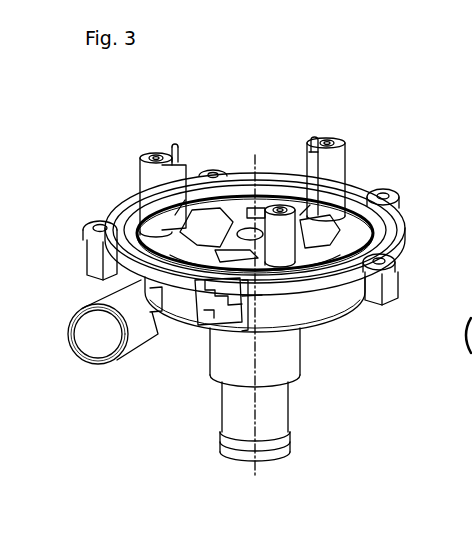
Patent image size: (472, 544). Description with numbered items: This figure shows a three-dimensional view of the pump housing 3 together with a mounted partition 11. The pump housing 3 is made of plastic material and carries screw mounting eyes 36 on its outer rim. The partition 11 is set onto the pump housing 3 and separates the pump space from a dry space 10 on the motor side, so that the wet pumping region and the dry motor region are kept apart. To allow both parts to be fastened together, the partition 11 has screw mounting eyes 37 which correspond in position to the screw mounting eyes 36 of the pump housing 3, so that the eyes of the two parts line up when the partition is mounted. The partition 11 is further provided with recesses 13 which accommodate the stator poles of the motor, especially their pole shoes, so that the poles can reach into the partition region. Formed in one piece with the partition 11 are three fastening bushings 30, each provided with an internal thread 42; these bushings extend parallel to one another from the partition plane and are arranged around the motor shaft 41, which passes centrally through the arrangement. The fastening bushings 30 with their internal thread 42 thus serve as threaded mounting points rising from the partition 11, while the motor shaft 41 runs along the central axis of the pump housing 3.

The pump housing 3 is at (163, 318).
The dry space 10 is at (352, 210).
The partition 11 is at (122, 201).
The recesses 13 is at (193, 228).
The fastening bushings 30 is at (148, 188).
The screw mounting eyes 36 is at (95, 258).
The screw mounting eyes 37 is at (213, 173).
The motor shaft 41 is at (255, 412).
The internal thread 42 is at (156, 156).